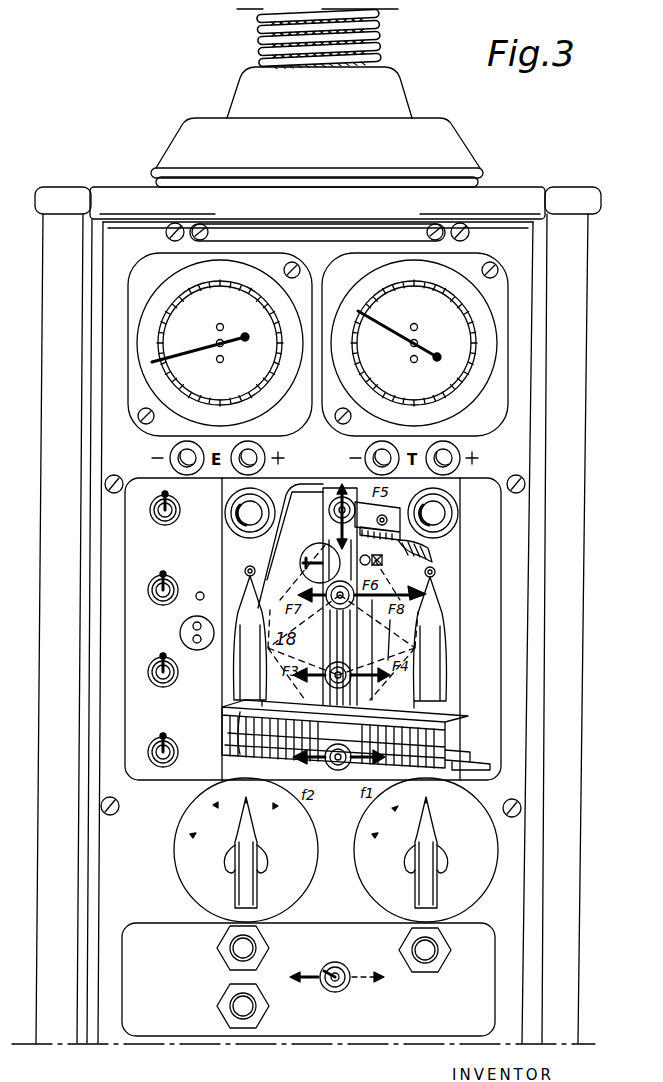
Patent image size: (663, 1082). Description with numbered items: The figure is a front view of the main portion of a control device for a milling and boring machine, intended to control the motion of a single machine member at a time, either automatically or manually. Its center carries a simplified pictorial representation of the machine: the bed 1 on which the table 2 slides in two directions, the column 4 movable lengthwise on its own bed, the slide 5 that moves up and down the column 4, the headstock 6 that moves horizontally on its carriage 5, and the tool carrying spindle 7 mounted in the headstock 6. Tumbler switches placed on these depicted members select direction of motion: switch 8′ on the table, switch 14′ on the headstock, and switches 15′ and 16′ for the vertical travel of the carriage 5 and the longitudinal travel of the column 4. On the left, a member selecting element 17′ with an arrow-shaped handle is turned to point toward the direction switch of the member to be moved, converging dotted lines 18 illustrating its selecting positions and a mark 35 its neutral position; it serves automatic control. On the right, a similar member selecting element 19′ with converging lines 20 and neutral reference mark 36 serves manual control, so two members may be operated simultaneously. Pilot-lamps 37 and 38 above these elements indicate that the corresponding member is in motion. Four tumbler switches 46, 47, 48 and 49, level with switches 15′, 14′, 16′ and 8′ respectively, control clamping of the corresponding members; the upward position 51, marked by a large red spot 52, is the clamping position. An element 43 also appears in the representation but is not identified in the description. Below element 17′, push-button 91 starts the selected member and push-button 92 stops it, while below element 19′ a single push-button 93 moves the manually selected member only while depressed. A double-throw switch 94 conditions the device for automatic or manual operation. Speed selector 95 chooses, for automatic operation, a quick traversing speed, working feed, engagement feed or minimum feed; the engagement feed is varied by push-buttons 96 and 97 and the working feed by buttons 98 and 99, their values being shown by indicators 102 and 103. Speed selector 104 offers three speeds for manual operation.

The bed 1 is at (450, 760).
The table 2 is at (238, 752).
The column 4 is at (375, 650).
The slide 5 is at (388, 518).
The headstock 6 is at (420, 558).
The tool carrying spindle 7 is at (305, 565).
The switch 8′ is at (328, 768).
The switch 14′ is at (325, 632).
The switch 15′ is at (328, 510).
The switch 16′ is at (325, 686).
The member selecting element 17′ is at (276, 695).
The converging dotted lines 18 is at (282, 603).
The member selecting element 19′ is at (406, 701).
The converging lines 20 is at (397, 640).
The neutral position 35 is at (250, 566).
The reference mark 36 is at (435, 574).
The pilot-lamp 37 is at (264, 500).
The pilot-lamp 38 is at (445, 514).
The adjusting disc 43 is at (310, 556).
The switch 46 is at (172, 502).
The switch 47 is at (160, 584).
The switch 48 is at (161, 665).
The switch 49 is at (161, 746).
The clamping position 51 is at (198, 650).
The red spot 52 is at (200, 592).
The push-button 91 is at (230, 948).
The push-button 92 is at (230, 1003).
The push-button 93 is at (438, 950).
The double-throw switch 94 is at (330, 966).
The speed selector 95 is at (250, 894).
The push-button 96 is at (256, 458).
The push-button 97 is at (170, 462).
The button 98 is at (451, 458).
The button 99 is at (374, 456).
The indicator 102 is at (187, 318).
The indicator 103 is at (445, 318).
The speed selector 104 is at (428, 897).